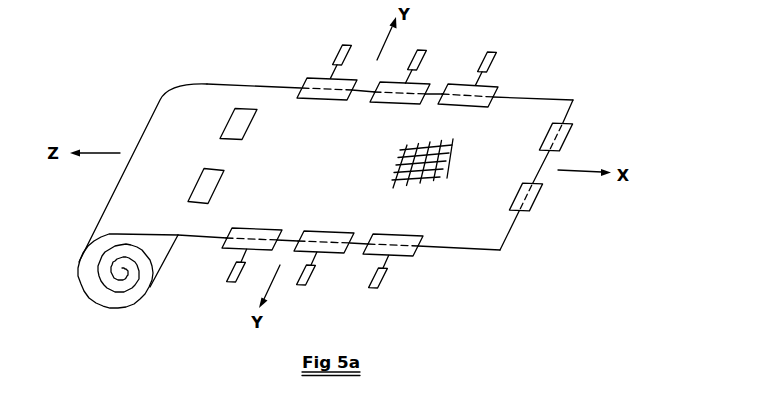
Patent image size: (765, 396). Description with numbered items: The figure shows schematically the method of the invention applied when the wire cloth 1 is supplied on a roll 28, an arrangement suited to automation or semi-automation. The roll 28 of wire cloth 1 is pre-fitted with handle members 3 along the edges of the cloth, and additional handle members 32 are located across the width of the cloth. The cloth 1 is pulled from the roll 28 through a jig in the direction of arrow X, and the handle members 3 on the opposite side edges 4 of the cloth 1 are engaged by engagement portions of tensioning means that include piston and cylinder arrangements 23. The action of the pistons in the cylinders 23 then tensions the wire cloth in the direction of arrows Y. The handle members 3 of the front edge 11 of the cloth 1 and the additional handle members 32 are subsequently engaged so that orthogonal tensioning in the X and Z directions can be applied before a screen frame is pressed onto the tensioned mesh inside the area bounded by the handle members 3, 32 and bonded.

The wire cloth 1 is at (540, 108).
The handle members 3 is at (462, 88).
The side edges 4 is at (517, 97).
The front edge 11 is at (512, 232).
The piston and cylinder arrangements 23 is at (337, 56).
The roll 28 is at (88, 298).
The additional handle members 32 is at (242, 118).